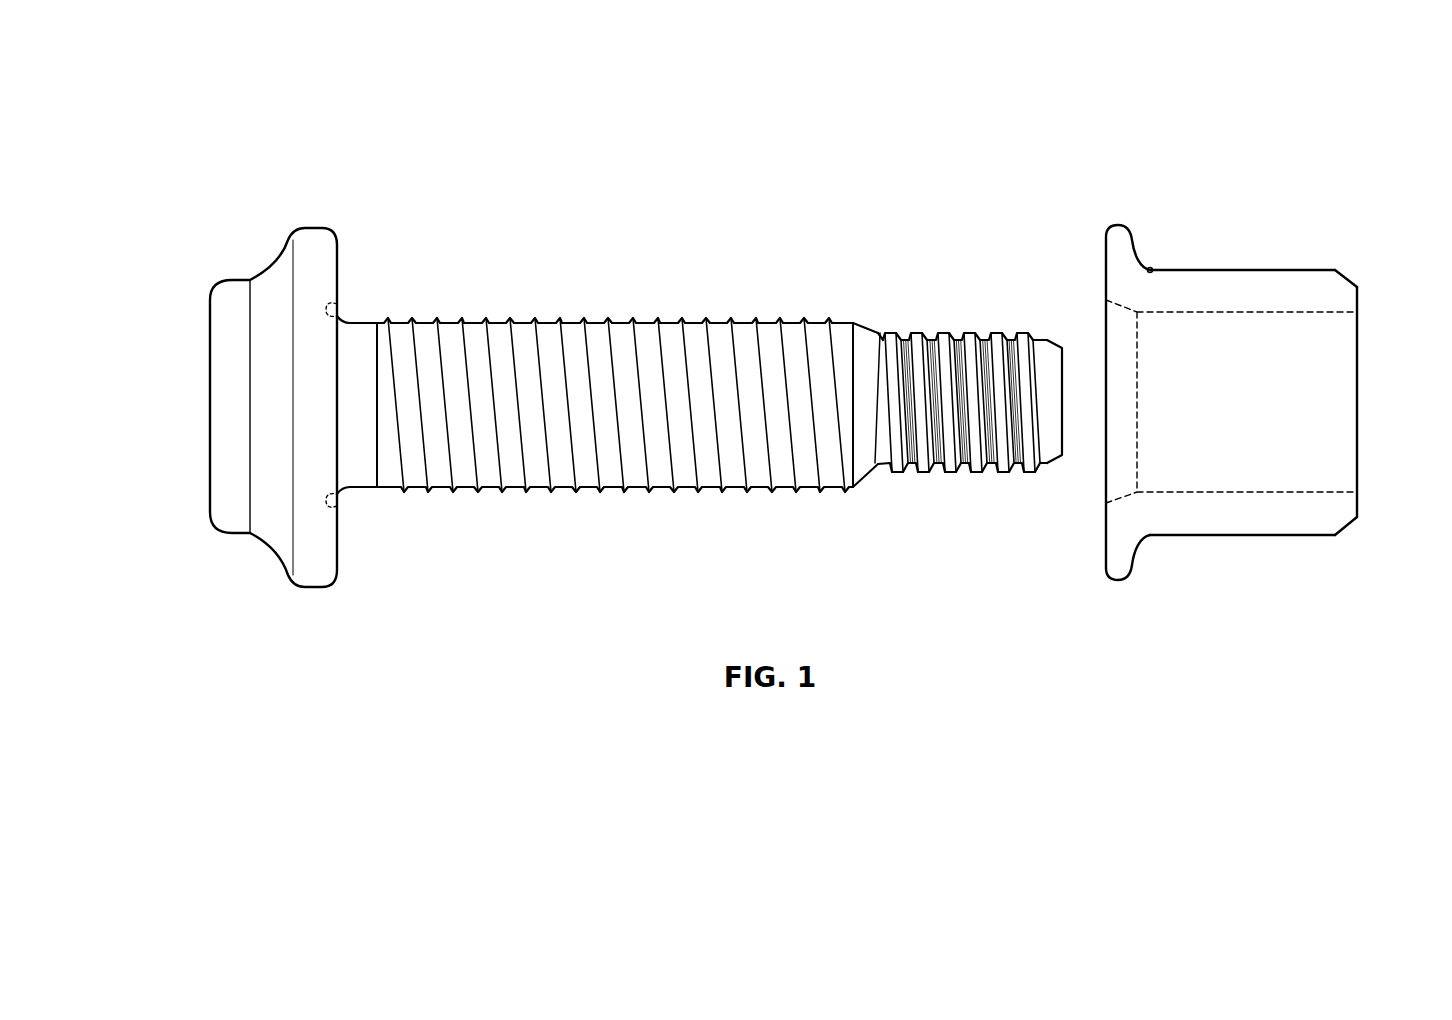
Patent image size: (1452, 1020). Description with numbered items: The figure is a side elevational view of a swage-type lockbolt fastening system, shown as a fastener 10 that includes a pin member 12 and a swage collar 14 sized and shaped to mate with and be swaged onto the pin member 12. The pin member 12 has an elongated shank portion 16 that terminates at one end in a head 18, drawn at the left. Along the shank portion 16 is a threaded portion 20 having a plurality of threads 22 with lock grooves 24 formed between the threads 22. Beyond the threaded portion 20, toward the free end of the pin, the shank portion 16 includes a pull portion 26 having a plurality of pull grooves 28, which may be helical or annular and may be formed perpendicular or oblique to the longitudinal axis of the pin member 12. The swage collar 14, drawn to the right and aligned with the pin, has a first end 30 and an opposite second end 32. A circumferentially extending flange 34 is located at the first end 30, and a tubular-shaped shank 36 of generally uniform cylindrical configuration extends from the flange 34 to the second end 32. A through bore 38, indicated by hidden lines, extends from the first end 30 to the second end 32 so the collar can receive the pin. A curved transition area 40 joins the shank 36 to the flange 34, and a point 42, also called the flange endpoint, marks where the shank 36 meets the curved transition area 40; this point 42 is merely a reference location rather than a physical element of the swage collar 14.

The fastener 10 is at (248, 108).
The pin member 12 is at (512, 321).
The swage collar 14 is at (1232, 270).
The shank portion 16 is at (625, 321).
The head 18 is at (263, 271).
The threaded portion 20 is at (688, 489).
The threads 22 is at (757, 321).
The lock grooves 24 is at (540, 489).
The pull portion 26 is at (945, 333).
The pull grooves 28 is at (962, 473).
The first end 30 is at (1106, 272).
The second end 32 is at (1357, 296).
The flange 34 is at (1122, 572).
The shank 36 is at (1258, 270).
The through bore 38 is at (1302, 395).
The curved transition area 40 is at (1148, 537).
The point 42 is at (1152, 268).